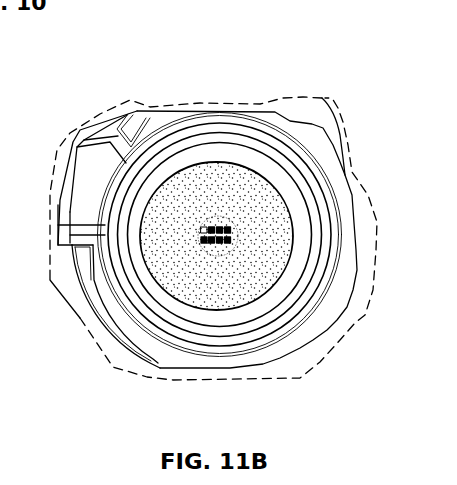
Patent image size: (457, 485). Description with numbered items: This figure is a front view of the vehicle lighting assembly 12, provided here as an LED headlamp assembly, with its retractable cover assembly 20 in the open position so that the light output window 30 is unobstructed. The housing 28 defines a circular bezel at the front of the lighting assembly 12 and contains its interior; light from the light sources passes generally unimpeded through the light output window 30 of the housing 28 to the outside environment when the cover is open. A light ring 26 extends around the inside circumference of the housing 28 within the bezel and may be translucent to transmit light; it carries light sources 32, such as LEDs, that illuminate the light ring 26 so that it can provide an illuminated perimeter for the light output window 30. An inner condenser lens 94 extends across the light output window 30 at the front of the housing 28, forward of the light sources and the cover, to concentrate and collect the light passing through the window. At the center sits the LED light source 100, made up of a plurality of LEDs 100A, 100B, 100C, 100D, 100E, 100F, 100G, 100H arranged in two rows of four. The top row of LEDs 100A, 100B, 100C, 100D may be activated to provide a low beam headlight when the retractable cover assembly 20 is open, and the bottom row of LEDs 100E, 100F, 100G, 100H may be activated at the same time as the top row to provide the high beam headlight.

The vehicle lighting assembly 12 is at (289, 59).
The retractable cover assembly 20 is at (327, 96).
The light ring 26 is at (290, 192).
The housing 28 is at (108, 215).
The light output window 30 is at (290, 197).
The light sources 32 is at (5, 282).
The inner condenser lens 94 is at (162, 263).
The light source 100 is at (238, 235).
The LED 100A is at (207, 229).
The LED 100B is at (211, 226).
The LED 100C is at (225, 227).
The LED 100D is at (229, 229).
The LED 100E is at (209, 246).
The LED 100F is at (213, 248).
The LED 100G is at (223, 248).
The LED 100H is at (229, 246).